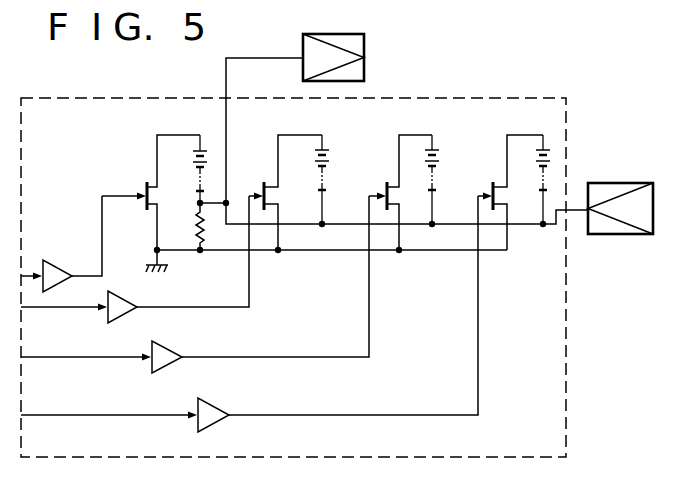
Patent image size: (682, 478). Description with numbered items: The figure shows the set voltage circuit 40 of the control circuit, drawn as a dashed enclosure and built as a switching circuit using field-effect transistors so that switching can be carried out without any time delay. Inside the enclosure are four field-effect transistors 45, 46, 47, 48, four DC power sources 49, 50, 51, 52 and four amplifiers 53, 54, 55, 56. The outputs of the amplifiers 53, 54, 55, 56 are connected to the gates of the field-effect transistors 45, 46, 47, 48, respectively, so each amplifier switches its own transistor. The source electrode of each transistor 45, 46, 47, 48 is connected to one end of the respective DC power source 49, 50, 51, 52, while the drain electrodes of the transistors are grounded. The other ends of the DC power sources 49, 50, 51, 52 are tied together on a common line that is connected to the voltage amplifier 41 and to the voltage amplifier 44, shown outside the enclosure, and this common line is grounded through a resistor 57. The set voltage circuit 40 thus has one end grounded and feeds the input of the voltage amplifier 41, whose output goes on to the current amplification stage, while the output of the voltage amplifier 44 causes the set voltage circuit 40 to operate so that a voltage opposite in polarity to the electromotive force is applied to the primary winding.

The set voltage circuit 40 is at (519, 97).
The voltage amplifier 41 is at (368, 56).
The voltage amplifier 44 is at (610, 236).
The field-effect transistor 45 is at (145, 187).
The field-effect transistor 46 is at (263, 188).
The field-effect transistor 47 is at (386, 187).
The field-effect transistor 48 is at (492, 187).
The DC power source 49 is at (198, 164).
The DC power source 50 is at (337, 156).
The DC power source 51 is at (447, 156).
The DC power source 52 is at (557, 156).
The amplifier 53 is at (64, 262).
The amplifier 54 is at (122, 292).
The amplifier 55 is at (173, 342).
The amplifier 56 is at (219, 399).
The resistor 57 is at (197, 233).